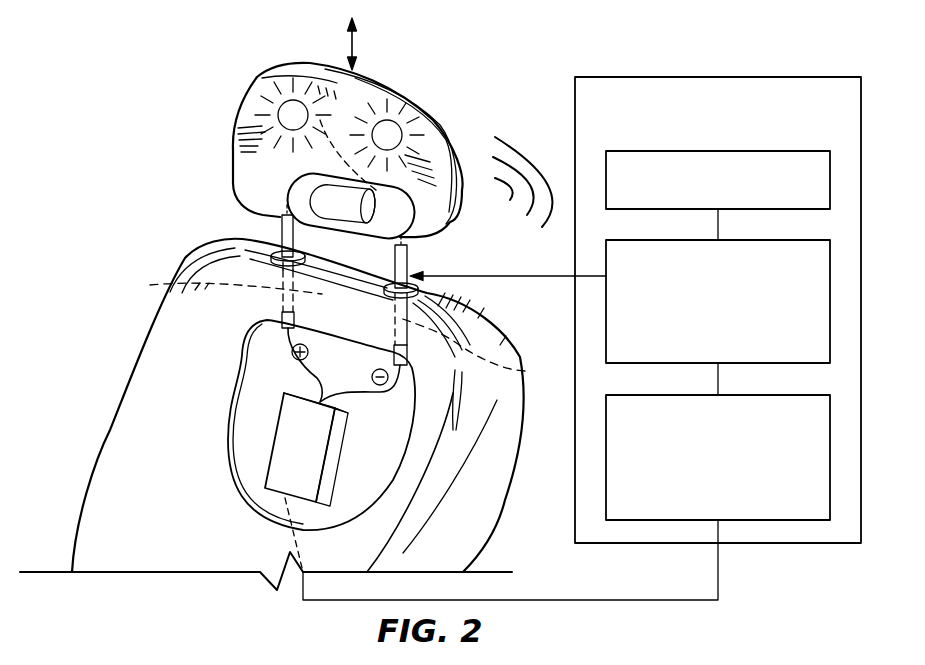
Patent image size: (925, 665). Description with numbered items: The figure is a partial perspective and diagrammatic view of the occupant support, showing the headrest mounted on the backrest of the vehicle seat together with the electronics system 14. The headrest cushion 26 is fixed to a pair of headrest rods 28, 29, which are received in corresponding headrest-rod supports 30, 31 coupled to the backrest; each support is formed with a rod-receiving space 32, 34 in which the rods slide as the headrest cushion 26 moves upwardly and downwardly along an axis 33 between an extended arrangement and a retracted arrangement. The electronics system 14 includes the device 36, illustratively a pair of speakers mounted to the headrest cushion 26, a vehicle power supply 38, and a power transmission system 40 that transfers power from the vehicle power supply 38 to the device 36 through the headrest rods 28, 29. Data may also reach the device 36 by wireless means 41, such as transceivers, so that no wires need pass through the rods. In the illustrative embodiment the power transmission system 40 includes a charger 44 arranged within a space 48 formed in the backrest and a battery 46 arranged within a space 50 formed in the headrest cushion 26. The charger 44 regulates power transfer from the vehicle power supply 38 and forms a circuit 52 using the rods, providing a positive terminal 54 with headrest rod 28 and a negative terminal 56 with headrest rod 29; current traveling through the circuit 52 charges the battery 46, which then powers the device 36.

The electronics system 14 is at (742, 283).
The headrest cushion 26 is at (229, 114).
The headrest rod 28 is at (281, 220).
The headrest rod 29 is at (412, 253).
The headrest-rod support 30 is at (258, 248).
The headrest-rod support 31 is at (430, 302).
The rod-receiving space 32 is at (152, 286).
The axis 33 is at (362, 44).
The rod-receiving space 34 is at (525, 371).
The device 36 is at (830, 182).
The vehicle power supply 38 is at (830, 458).
The power transmission system 40 is at (830, 302).
The wireless means 41 is at (537, 128).
The charger 44 is at (259, 435).
The battery 46 is at (288, 178).
The space 48 is at (370, 455).
The space 50 is at (397, 198).
The circuit 52 is at (278, 352).
The positive terminal 54 is at (270, 317).
The negative terminal 56 is at (424, 358).